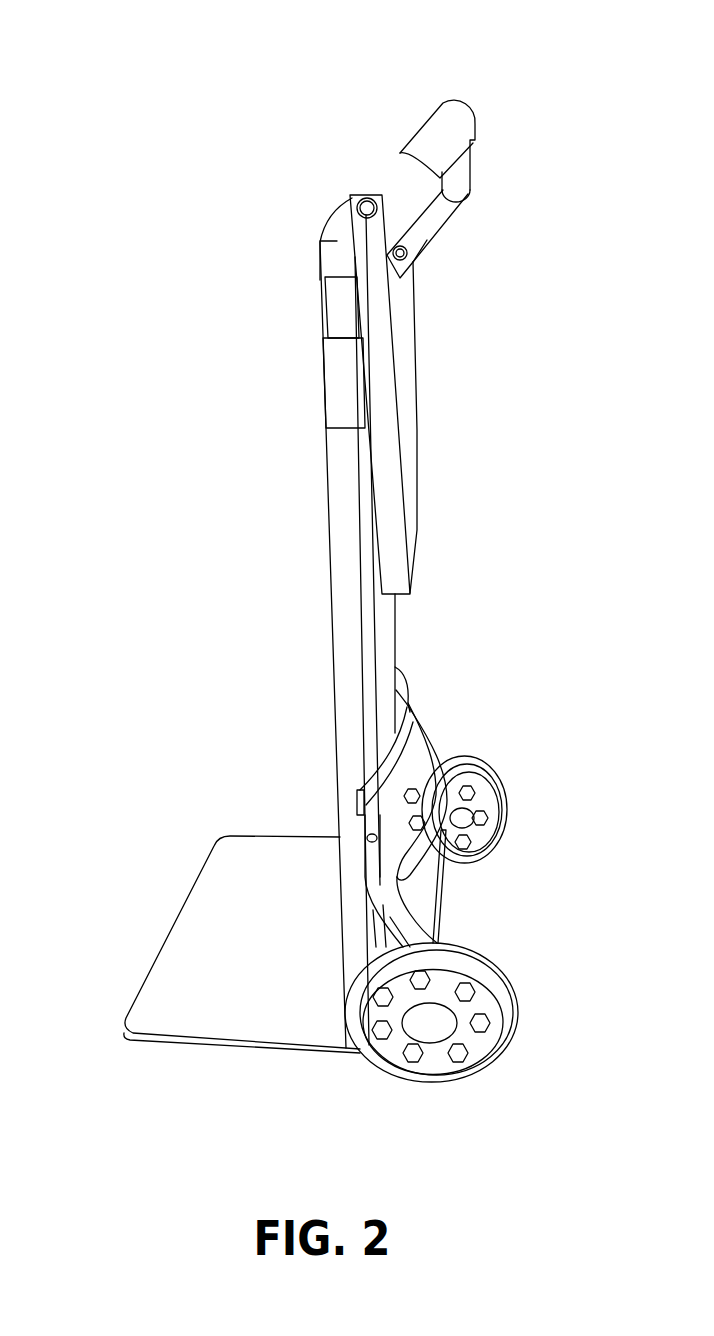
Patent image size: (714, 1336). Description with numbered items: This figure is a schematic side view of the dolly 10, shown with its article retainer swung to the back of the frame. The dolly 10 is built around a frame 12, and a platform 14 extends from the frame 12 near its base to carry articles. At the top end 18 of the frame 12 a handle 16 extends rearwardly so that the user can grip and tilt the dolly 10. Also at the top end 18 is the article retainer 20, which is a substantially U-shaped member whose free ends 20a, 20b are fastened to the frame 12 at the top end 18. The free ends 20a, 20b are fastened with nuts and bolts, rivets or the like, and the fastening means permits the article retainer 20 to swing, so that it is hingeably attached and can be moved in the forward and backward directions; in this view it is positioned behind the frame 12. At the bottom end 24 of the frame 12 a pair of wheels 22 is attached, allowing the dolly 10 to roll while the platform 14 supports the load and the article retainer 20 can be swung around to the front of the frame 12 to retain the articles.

The dolly 10 is at (141, 53).
The frame 12 is at (397, 640).
The platform 14 is at (123, 1013).
The handle 16 is at (472, 165).
The top end 18 is at (323, 310).
The article retainer 20 is at (420, 475).
The free end 20a is at (400, 278).
The free end 20b is at (322, 240).
The wheels 22 is at (492, 780).
The bottom end 24 is at (402, 883).